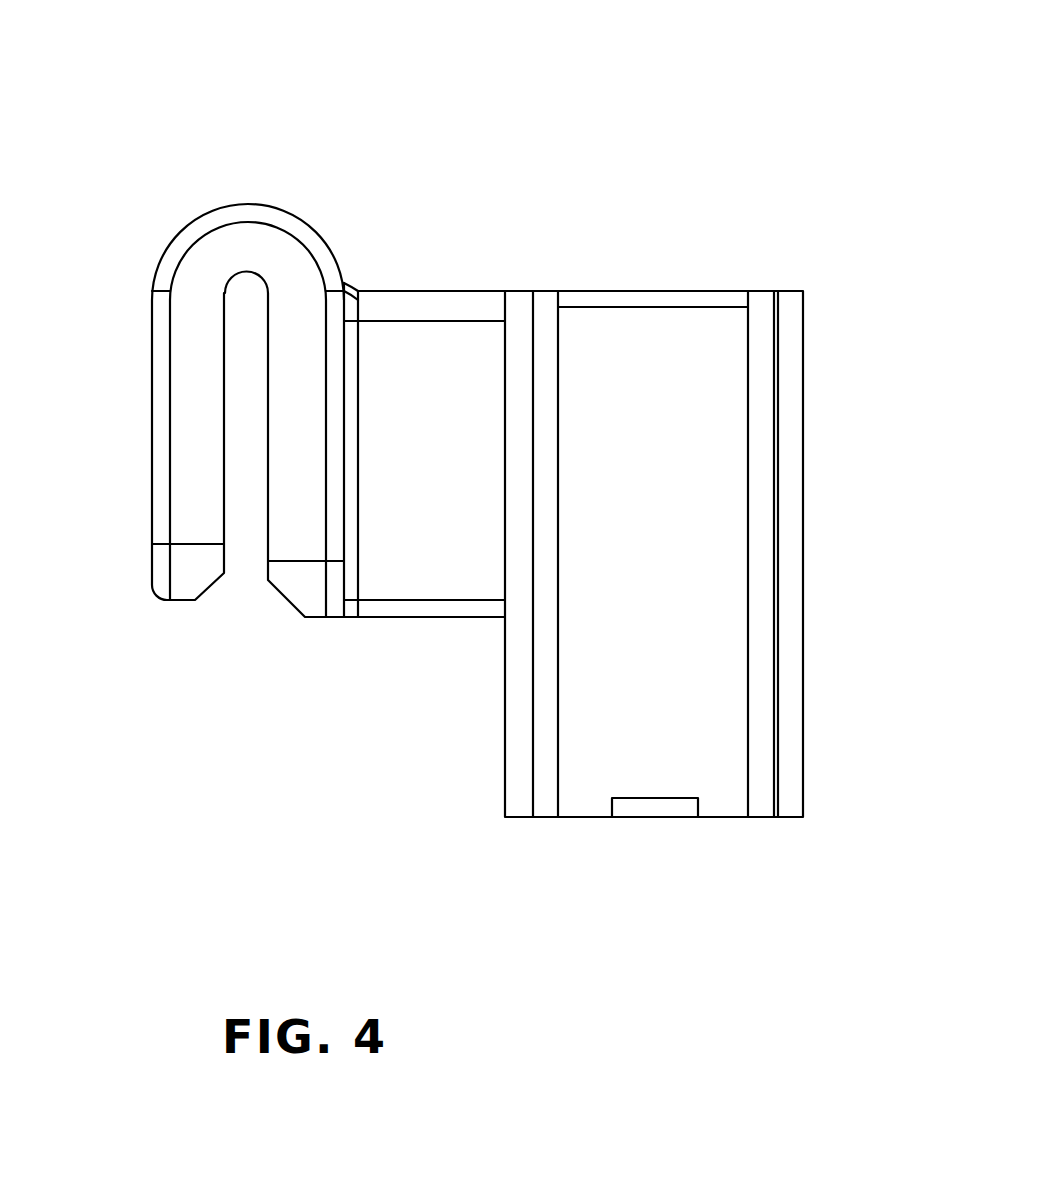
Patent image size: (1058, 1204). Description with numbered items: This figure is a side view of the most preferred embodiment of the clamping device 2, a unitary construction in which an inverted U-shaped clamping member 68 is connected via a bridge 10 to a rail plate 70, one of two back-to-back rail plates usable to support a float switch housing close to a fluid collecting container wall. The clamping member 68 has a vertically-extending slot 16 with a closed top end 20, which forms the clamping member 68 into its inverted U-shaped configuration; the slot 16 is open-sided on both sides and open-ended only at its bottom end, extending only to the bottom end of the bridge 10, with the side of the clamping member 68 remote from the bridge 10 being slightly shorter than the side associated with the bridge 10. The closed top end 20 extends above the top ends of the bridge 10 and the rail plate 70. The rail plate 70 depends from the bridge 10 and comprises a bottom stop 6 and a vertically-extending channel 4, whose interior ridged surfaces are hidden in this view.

The clamping device 2 is at (800, 72).
The vertically-extending channel 4 is at (658, 302).
The bottom stop 6 is at (650, 808).
The bridge 10 is at (420, 545).
The slot 16 is at (236, 452).
The closed top end 20 is at (243, 172).
The clamping member 68 is at (203, 297).
The rail plate 70 is at (790, 555).